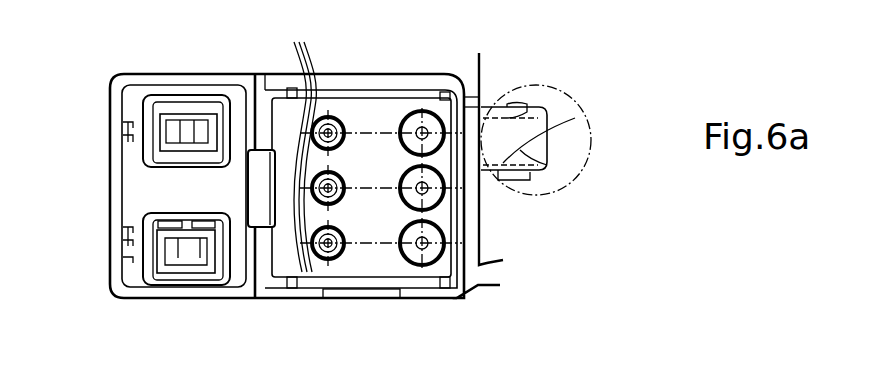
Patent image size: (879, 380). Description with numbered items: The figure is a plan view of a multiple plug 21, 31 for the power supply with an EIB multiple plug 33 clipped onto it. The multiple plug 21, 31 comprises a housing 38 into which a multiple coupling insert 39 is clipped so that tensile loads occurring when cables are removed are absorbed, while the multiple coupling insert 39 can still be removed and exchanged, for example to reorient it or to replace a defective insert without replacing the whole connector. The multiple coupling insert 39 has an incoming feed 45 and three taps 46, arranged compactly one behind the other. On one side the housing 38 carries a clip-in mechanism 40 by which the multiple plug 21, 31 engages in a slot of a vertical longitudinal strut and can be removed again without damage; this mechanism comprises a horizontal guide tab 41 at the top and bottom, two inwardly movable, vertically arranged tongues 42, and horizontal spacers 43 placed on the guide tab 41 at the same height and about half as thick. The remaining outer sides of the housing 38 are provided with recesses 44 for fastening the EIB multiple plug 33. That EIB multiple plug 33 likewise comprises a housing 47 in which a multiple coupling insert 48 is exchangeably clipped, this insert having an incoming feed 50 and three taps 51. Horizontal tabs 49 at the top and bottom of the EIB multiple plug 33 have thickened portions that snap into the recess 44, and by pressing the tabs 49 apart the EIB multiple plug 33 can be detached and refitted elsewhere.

The multiple plug 21 is at (577, 217).
The multiple plug 31 is at (429, 190).
The EIB multiple plug 33 is at (106, 289).
The housing 38 is at (462, 300).
The multiple coupling insert 39 is at (360, 232).
The clip-in mechanism 40 is at (577, 155).
The horizontal guide tab 41 is at (547, 165).
The tongue 42 is at (560, 150).
The spacer 43 is at (503, 260).
The recess 44 is at (377, 77).
The incoming feed 45 is at (447, 197).
The taps 46 is at (298, 144).
The housing 47 is at (110, 200).
The multiple coupling insert 48 is at (135, 177).
The horizontal tab 49 is at (290, 282).
The incoming feed 50 is at (177, 283).
The taps 51 is at (190, 95).